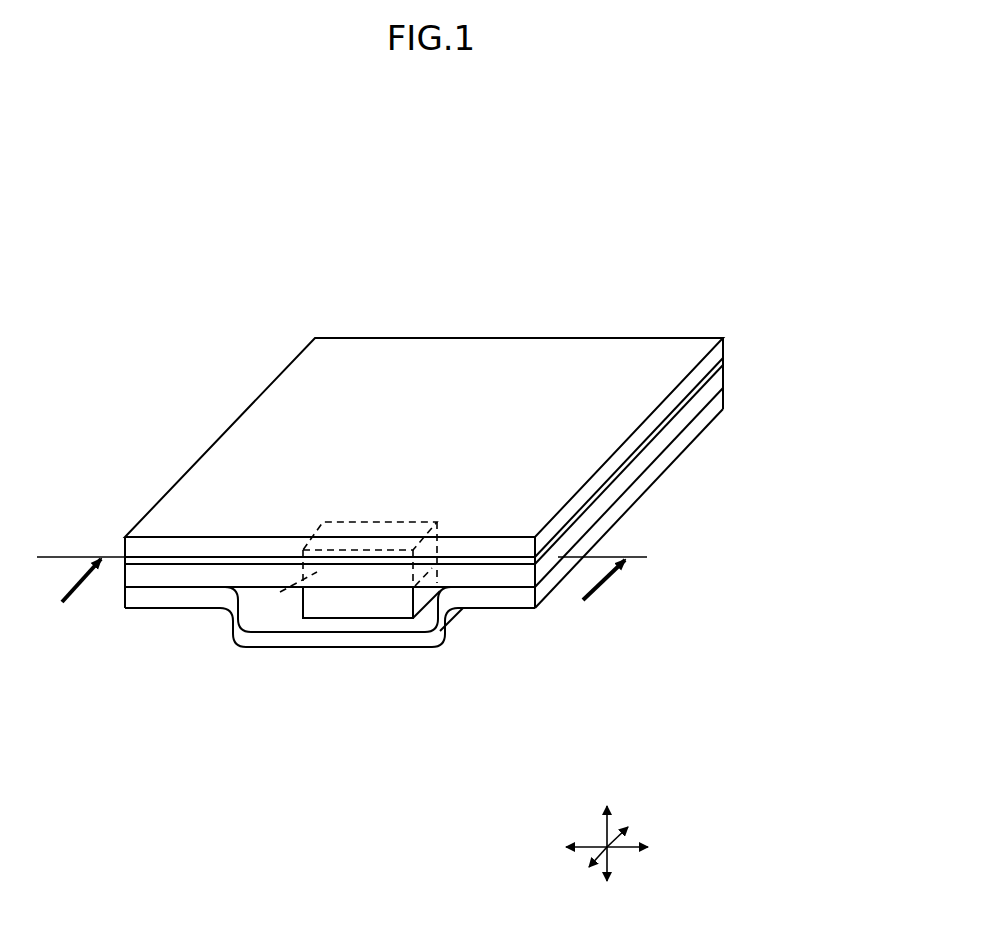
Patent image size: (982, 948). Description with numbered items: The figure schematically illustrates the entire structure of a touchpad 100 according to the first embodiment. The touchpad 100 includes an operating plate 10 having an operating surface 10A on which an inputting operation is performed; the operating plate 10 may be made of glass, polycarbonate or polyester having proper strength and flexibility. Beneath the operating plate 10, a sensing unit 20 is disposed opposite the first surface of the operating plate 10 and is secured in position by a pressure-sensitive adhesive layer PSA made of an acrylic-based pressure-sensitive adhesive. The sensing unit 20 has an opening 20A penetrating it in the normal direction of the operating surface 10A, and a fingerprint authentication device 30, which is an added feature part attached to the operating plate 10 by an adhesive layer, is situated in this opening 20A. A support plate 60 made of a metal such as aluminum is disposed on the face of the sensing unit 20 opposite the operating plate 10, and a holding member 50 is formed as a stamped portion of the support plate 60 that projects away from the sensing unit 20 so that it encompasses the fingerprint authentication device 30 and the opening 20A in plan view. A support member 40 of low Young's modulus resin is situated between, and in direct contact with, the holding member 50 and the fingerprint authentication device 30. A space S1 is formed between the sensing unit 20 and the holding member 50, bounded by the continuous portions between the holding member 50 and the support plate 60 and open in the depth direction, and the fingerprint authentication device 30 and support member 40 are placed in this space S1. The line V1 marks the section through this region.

The touchpad 100 is at (180, 232).
The operating plate 10 is at (481, 400).
The operating surface 10A is at (385, 398).
The pressure-sensitive adhesive layer PSA is at (715, 375).
The sensing unit 20 is at (705, 402).
The opening 20A is at (318, 522).
The fingerprint authentication device 30 is at (282, 591).
The support member 40 is at (385, 610).
The holding member 50 is at (342, 640).
The support plate 60 is at (662, 462).
The space S1 is at (293, 607).
The cross-section line V1 is at (338, 594).